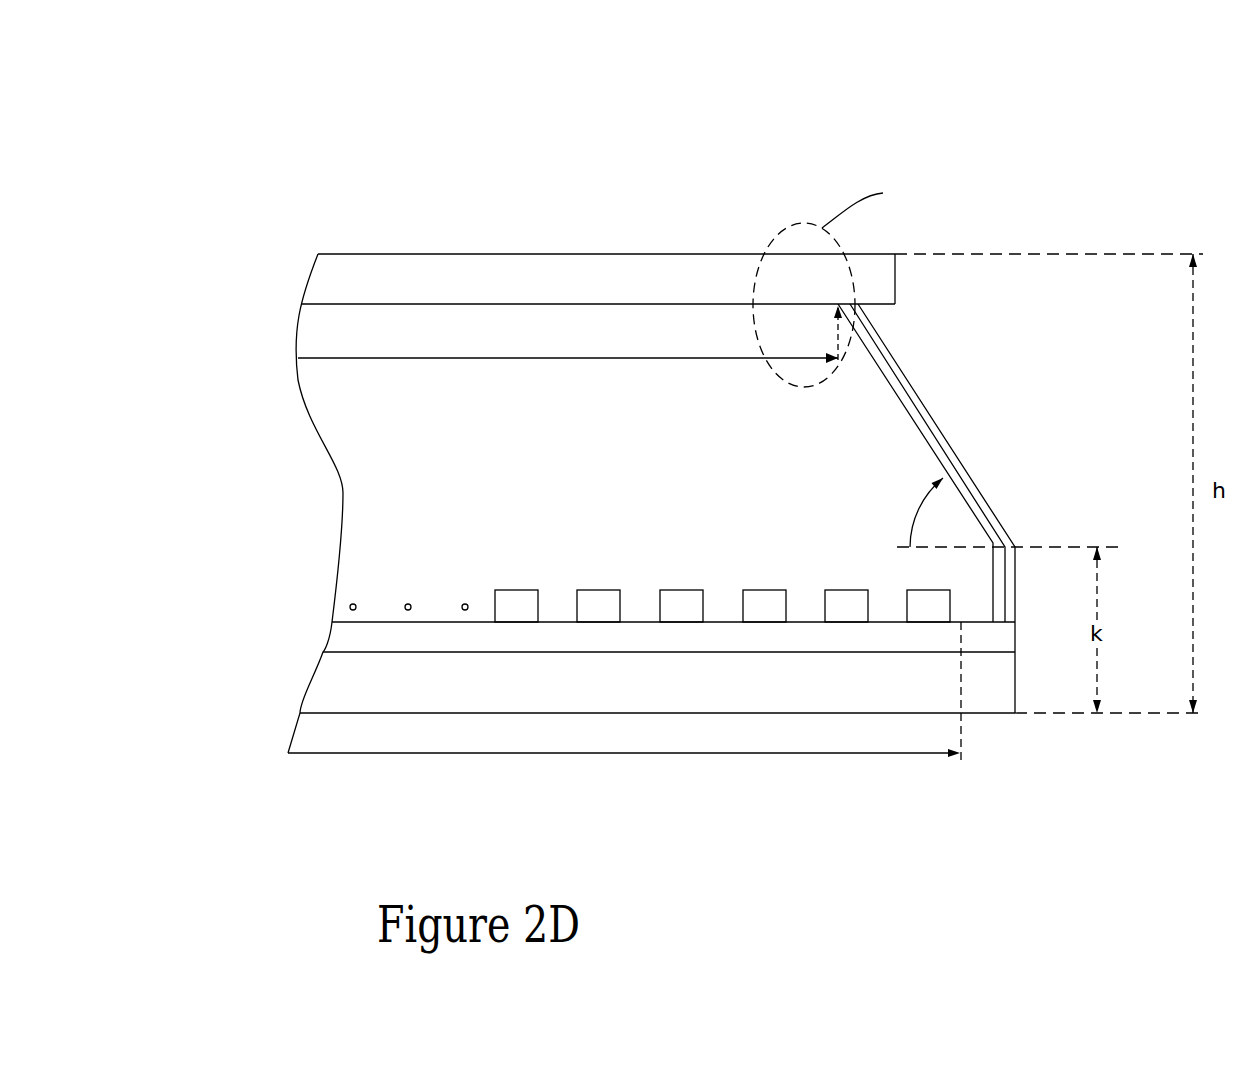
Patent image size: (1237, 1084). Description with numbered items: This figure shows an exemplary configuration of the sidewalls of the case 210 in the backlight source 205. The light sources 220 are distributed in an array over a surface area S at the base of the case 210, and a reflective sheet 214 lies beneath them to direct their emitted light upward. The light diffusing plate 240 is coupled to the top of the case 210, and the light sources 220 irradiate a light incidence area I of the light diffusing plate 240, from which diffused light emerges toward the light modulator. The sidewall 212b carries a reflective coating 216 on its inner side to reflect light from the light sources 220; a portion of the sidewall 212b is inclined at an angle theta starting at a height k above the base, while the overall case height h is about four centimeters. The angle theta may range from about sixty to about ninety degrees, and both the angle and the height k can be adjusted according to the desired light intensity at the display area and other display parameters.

The backlight source 205 is at (220, 148).
The case 210 is at (343, 492).
The sidewall 212b is at (912, 393).
The reflective sheet 214 is at (335, 637).
The reflective coating 216 is at (960, 485).
The light sources 220 is at (517, 598).
The light diffusing plate 240 is at (880, 293).